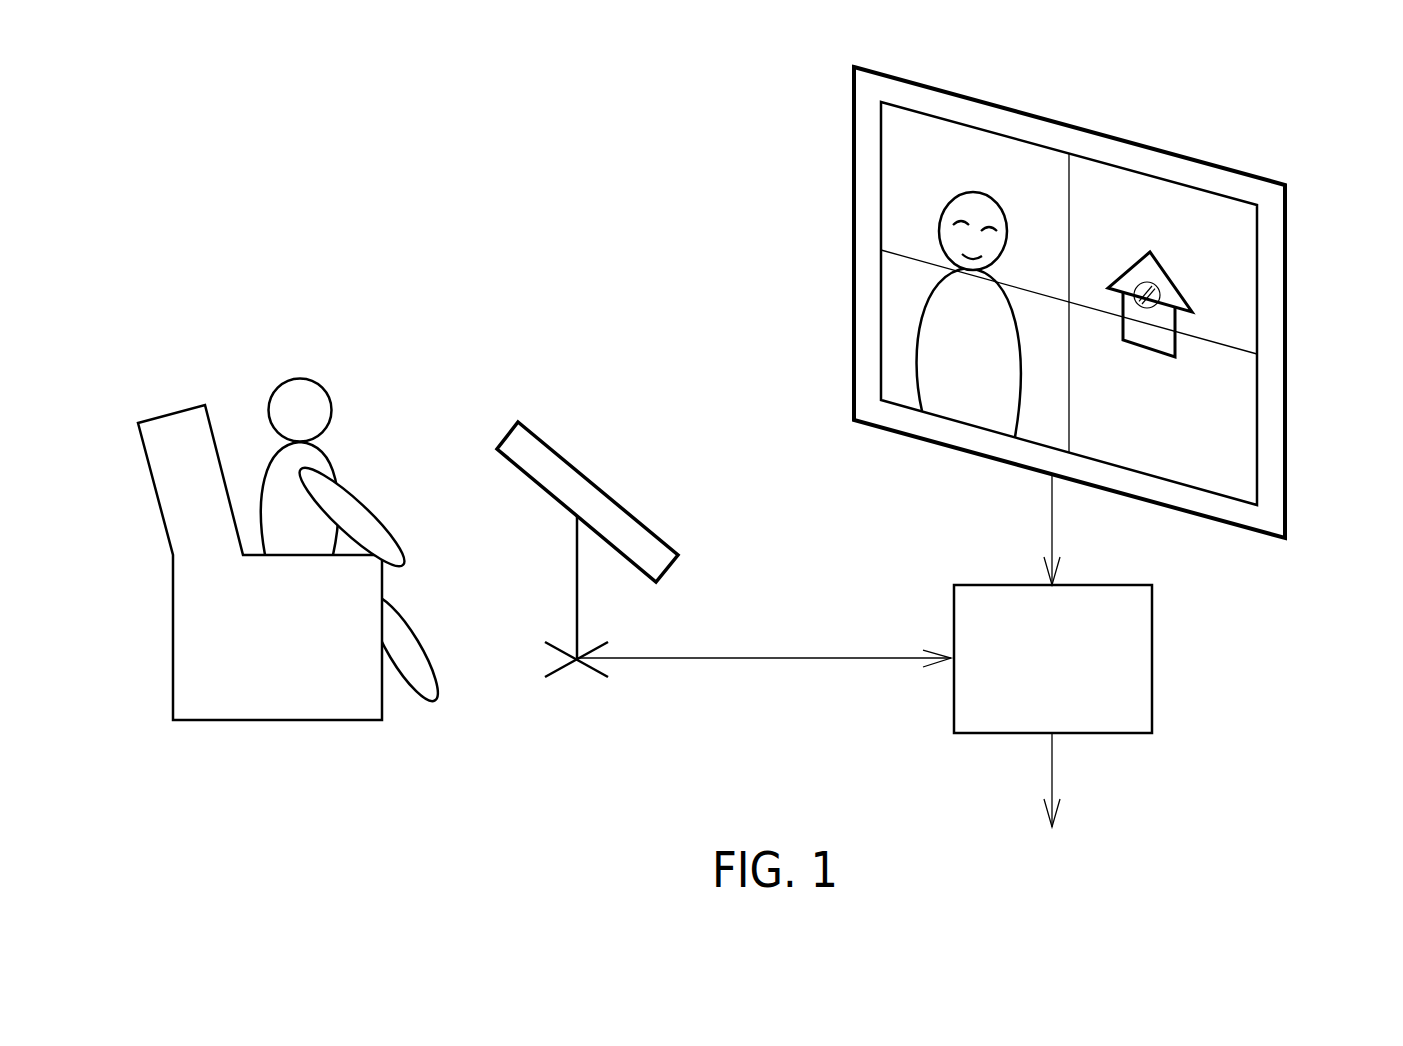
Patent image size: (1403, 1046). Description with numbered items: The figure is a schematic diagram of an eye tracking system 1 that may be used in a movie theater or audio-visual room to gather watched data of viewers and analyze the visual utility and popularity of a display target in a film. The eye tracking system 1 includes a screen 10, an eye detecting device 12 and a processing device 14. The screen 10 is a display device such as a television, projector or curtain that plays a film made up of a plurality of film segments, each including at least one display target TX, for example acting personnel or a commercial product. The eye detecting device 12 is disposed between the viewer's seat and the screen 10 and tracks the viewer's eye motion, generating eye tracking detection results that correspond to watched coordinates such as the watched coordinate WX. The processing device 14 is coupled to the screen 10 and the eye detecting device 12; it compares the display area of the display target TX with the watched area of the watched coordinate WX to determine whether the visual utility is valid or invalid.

The eye tracking system 1 is at (362, 110).
The screen 10 is at (1113, 292).
The eye detecting device 12 is at (570, 463).
The processing device 14 is at (1153, 637).
The display target TX is at (975, 192).
The watched coordinate WX is at (1155, 287).